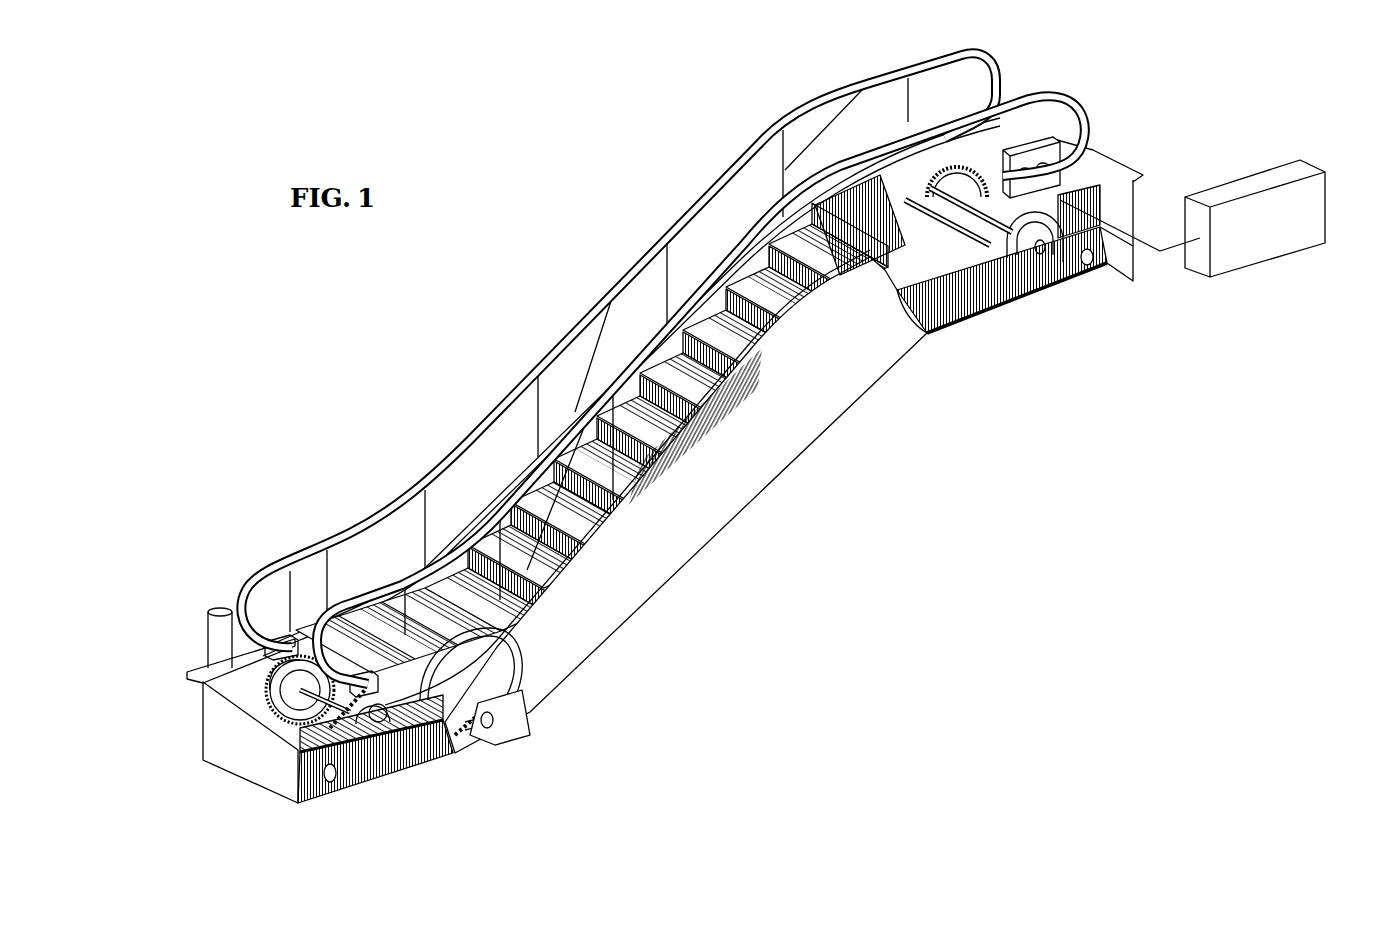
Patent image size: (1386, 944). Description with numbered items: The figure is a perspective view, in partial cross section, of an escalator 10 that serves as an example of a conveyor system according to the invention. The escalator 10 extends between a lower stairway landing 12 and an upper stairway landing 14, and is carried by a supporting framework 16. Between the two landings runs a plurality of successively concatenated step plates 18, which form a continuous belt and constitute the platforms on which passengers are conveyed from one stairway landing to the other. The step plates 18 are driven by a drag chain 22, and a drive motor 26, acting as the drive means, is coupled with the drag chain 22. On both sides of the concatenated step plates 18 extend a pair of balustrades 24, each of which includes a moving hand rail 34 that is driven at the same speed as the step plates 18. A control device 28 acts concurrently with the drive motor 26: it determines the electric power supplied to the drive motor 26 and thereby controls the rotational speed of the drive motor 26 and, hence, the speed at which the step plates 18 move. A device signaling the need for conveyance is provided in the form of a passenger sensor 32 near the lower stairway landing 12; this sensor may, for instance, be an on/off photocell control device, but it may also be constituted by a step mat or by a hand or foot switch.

The escalator 10 is at (480, 328).
The lower stairway landing 12 is at (181, 665).
The upper stairway landing 14 is at (1137, 172).
The supporting framework 16 is at (1065, 268).
The step plates 18 is at (892, 200).
The drag chain 22 is at (500, 673).
The balustrades 24 is at (500, 427).
The drive motor 26 is at (1063, 183).
The control device 28 is at (1285, 172).
The passenger sensor 32 is at (222, 608).
The moving hand rail 34 is at (838, 88).